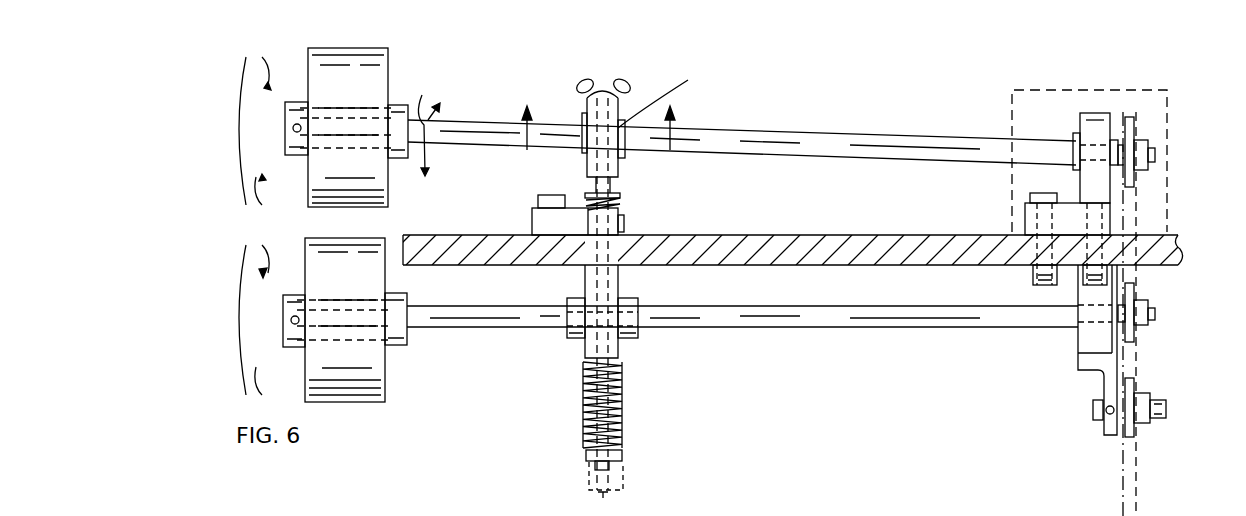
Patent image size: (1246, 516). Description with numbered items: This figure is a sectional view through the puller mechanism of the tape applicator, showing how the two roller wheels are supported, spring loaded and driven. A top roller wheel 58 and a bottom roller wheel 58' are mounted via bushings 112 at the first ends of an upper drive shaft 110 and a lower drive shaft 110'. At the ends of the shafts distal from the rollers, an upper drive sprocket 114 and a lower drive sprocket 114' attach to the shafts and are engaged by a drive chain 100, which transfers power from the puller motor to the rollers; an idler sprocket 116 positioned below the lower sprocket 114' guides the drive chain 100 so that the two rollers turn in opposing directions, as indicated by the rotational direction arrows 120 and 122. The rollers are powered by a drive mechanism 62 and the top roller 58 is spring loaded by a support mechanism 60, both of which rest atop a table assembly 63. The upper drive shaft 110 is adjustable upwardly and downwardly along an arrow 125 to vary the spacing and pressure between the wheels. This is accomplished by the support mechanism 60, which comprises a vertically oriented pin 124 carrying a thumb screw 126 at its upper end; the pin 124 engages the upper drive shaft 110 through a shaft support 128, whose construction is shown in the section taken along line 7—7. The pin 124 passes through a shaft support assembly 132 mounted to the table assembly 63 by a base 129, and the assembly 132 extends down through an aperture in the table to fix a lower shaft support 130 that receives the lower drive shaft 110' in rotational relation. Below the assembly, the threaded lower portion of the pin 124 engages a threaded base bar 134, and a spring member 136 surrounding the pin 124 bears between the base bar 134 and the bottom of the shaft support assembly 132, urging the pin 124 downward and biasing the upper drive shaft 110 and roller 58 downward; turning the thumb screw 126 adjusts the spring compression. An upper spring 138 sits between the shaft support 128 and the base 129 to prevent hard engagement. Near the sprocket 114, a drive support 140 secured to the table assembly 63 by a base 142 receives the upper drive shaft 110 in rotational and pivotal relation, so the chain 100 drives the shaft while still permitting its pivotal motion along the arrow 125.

The line 7— 7 is at (596, 142).
The top roller wheel 58 is at (368, 117).
The bottom roller wheel 58' is at (367, 330).
The support mechanism 60 is at (630, 94).
The drive mechanism 62 is at (1090, 88).
The table assembly 63 is at (1180, 236).
The drive chain 100 is at (1138, 490).
The upper drive shaft 110 is at (742, 121).
The lower drive shaft 110' is at (742, 345).
The bushings 112 is at (297, 102).
The upper drive sprocket 114 is at (1172, 150).
The lower drive sprocket 114' is at (1171, 311).
The idler sprocket 116 is at (1134, 383).
The rotational direction arrow 120 is at (238, 131).
The rotational direction arrow 122 is at (236, 330).
The vertically oriented pin 124 is at (622, 180).
The arrow 125 is at (424, 123).
The thumb screw 126 is at (598, 88).
The shaft support 128 is at (672, 80).
The base 129 is at (532, 221).
The lower shaft support 130 is at (640, 300).
The shaft support assembly 132 is at (620, 204).
The threaded base bar 134 is at (622, 456).
The spring member 136 is at (622, 410).
The upper spring 138 is at (585, 195).
The drive support 140 is at (1080, 123).
The base 142 is at (1025, 218).